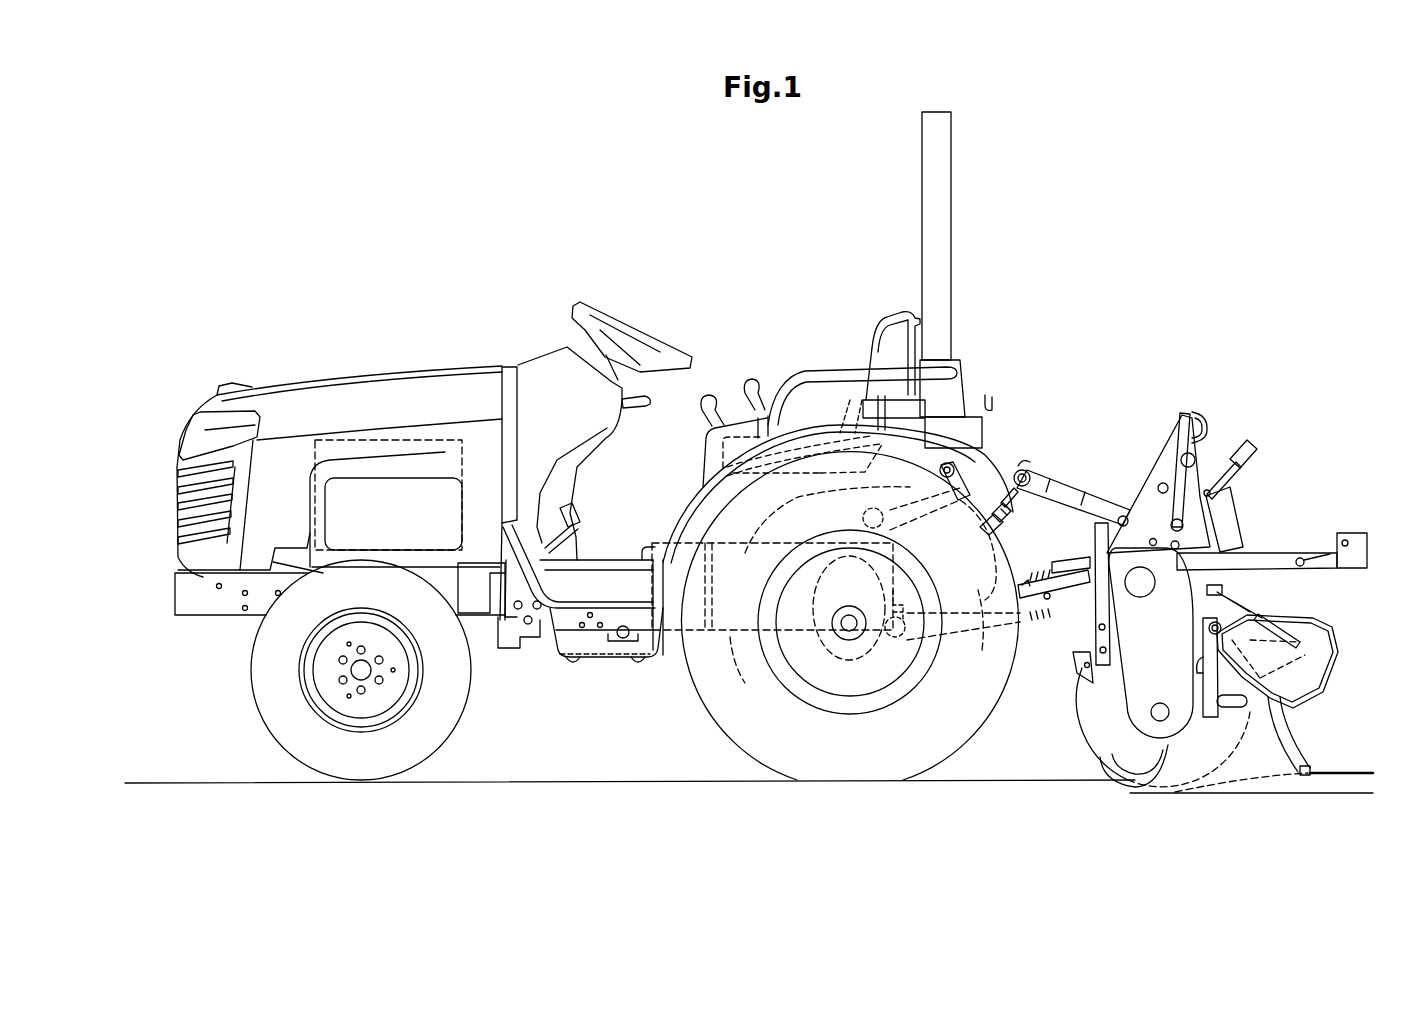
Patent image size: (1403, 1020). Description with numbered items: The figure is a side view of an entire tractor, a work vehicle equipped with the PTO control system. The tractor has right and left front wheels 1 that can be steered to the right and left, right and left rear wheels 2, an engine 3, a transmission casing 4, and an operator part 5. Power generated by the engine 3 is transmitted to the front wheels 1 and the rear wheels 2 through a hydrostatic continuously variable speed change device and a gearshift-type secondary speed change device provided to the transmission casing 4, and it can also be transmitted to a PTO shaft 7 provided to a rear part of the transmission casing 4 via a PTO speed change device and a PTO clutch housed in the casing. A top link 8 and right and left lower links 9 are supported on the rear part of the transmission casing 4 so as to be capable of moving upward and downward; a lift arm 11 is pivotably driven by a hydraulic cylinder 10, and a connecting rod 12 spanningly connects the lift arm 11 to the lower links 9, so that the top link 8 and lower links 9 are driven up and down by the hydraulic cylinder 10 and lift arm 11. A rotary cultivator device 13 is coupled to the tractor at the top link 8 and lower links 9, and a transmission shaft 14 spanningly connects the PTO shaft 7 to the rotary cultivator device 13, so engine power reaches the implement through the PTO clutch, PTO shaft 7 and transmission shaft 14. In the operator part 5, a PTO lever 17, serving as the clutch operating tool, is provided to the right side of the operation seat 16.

The front wheels 1 is at (273, 722).
The rear wheels 2 is at (720, 707).
The engine 3 is at (383, 438).
The transmission casing 4 is at (820, 600).
The operator part 5 is at (728, 318).
The PTO shaft 7 is at (915, 657).
The top link 8 is at (1012, 488).
The lower links 9 is at (1078, 597).
The hydraulic cylinder 10 is at (772, 586).
The lift arm 11 is at (925, 446).
The connecting rod 12 is at (985, 470).
The rotary cultivator device 13 is at (1273, 472).
The transmission shaft 14 is at (955, 587).
The operation seat 16 is at (878, 333).
The PTO lever 17 is at (757, 383).